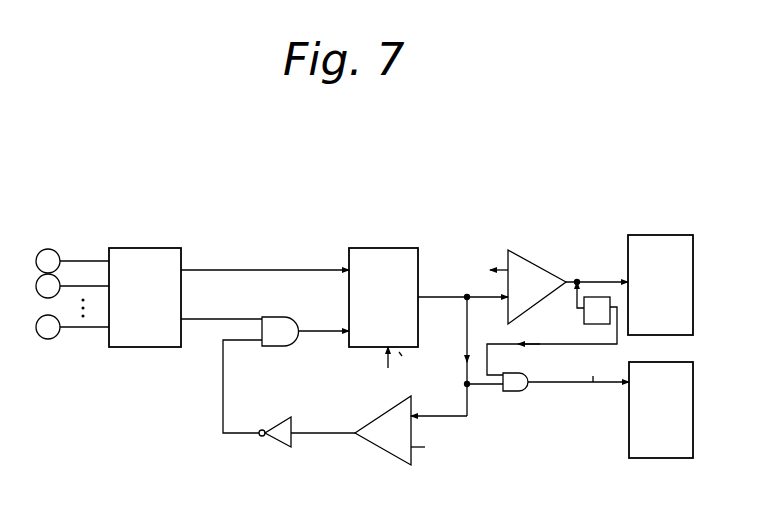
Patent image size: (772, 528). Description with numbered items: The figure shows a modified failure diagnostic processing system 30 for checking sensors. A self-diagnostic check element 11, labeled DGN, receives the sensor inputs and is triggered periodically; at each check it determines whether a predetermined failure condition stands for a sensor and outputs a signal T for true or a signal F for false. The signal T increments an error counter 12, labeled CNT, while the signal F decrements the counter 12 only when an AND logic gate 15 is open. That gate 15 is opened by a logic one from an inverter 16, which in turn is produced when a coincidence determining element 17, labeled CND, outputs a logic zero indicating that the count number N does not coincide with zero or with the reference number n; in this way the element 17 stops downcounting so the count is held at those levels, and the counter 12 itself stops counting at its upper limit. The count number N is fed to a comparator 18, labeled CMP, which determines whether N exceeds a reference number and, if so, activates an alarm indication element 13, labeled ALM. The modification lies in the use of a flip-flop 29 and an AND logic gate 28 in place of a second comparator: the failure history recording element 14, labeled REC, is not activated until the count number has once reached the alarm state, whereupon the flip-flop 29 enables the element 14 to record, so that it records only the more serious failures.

The modified failure diagnostic processing system 30 is at (260, 187).
The self-diagnostic check element 11 is at (140, 248).
The error counter 12 is at (398, 248).
The alarm indication element 13 is at (664, 236).
The failure history recording element 14 is at (653, 460).
The AND logic gate 15 is at (285, 318).
The inverter 16 is at (280, 450).
The coincidence determining element 17 is at (378, 449).
The comparator 18 is at (520, 254).
The AND logic gate 28 is at (527, 378).
The flip-flop 29 is at (583, 319).